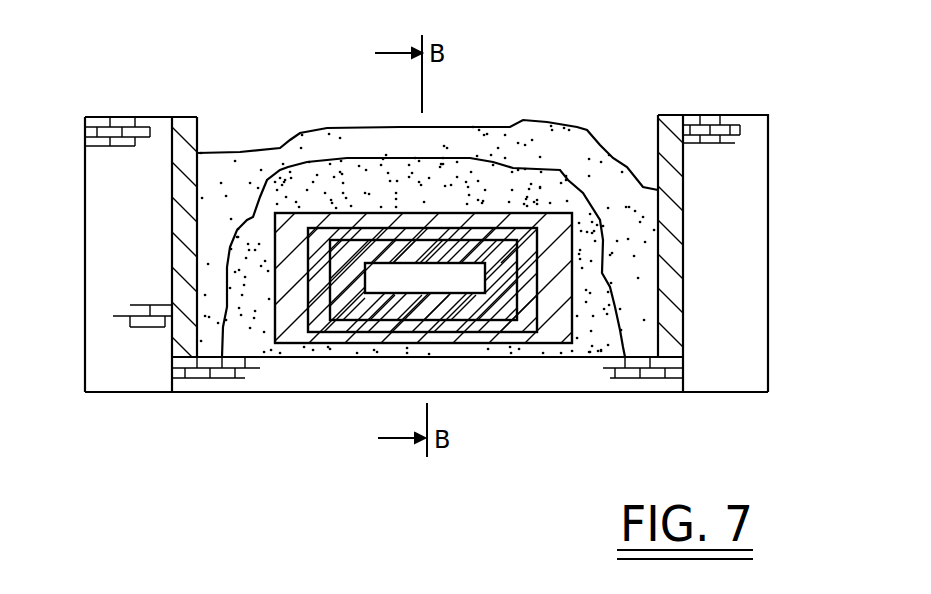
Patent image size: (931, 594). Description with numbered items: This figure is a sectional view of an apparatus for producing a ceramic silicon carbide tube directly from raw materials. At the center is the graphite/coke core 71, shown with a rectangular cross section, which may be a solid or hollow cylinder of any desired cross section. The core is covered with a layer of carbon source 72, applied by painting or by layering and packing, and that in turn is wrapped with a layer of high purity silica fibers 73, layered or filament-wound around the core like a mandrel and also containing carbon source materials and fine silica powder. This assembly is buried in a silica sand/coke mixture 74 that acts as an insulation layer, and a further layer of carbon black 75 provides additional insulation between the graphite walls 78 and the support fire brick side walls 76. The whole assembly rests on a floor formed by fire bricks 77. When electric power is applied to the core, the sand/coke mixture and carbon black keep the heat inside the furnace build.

The central graphite/coke core 71 is at (360, 350).
The layer of carbon source 72 is at (523, 271).
The layer of high purity silica fibers 73 is at (295, 233).
The silica sand/coke mixture 74 is at (462, 183).
The layer of carbon black 75 is at (362, 140).
The support fire brick side walls 76 is at (757, 170).
The fire bricks 77 is at (547, 376).
The graphite walls 78 is at (670, 113).